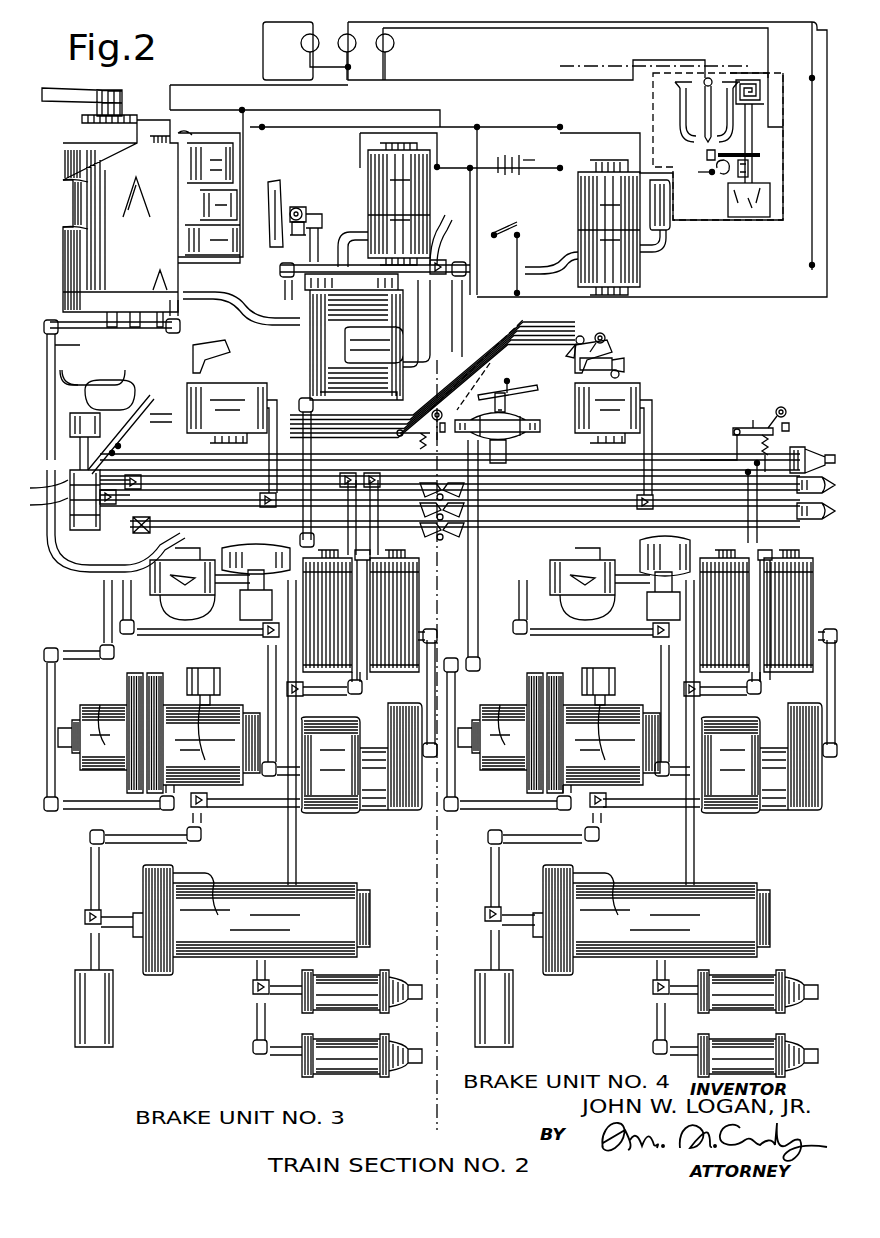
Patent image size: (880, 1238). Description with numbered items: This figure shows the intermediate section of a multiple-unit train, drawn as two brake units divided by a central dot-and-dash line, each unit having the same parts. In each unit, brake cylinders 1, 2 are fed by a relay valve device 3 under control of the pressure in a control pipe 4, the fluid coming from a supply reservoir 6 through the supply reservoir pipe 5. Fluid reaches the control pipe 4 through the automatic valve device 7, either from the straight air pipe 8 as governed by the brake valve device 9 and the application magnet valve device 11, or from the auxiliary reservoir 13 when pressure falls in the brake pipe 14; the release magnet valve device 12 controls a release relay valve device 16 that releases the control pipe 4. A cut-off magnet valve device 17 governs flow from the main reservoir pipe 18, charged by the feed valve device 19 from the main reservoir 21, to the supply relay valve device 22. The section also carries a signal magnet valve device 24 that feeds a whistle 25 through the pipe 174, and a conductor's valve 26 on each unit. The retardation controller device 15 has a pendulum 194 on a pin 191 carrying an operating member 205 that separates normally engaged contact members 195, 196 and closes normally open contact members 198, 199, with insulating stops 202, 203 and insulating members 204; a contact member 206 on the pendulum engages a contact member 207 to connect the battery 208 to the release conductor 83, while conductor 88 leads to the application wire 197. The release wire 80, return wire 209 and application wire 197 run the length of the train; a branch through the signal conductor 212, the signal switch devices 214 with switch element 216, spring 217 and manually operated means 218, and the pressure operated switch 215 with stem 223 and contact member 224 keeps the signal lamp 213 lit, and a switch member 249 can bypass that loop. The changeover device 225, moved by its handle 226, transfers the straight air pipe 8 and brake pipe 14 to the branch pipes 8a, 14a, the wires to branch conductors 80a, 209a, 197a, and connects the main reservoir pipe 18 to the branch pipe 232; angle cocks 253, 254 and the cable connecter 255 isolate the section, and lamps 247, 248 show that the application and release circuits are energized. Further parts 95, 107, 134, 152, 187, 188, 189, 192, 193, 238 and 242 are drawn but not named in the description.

The brake cylinder 1 is at (302, 1060).
The brake cylinder 2 is at (302, 1000).
The relay valve device 3 is at (156, 988).
The control pipe 4 is at (232, 805).
The supply reservoir pipe 5 is at (360, 693).
The supply reservoir 6 is at (628, 553).
The automatic valve device 7 is at (94, 772).
The straight air pipe 8 is at (677, 500).
The branch straight air pipe 8a is at (140, 400).
The brake valve device 9 is at (145, 130).
The application magnet valve device 11 is at (356, 551).
The release magnet valve device 12 is at (426, 551).
The auxiliary reservoir 13 is at (213, 672).
The brake pipe 14 is at (687, 503).
The branch brake pipe 14a is at (52, 322).
The retardation controller device 15 is at (762, 233).
The release relay valve device 16 is at (375, 806).
The cut-off magnet valve device 17 is at (358, 175).
The main reservoir pipe 18 is at (450, 265).
The feed valve device 19 is at (299, 238).
The main reservoir 21 is at (283, 190).
The supply relay valve device 22 is at (398, 318).
The signal magnet valve device 24 is at (583, 167).
The whistle 25 is at (667, 212).
The conductor's valve 26 is at (265, 385).
The release magnet valve wire 80 is at (632, 460).
The branch release conductor 80a is at (300, 127).
The release magnet valve conductor 83 is at (188, 96).
The conductor 88 is at (182, 85).
The casing 95 is at (75, 300).
The pipe 107 is at (430, 700).
The valve 134 is at (78, 970).
The pipe 152 is at (340, 240).
The pipe 174 is at (660, 240).
The lever 187 is at (593, 357).
The link 188 is at (626, 364).
The pivot 189 is at (628, 376).
The pin 191 is at (766, 89).
The pivot 192 is at (606, 338).
The lever 193 is at (573, 341).
The pendulum 194 is at (770, 205).
The contact member 195 is at (762, 137).
The contact member 196 is at (754, 113).
The application magnet valve conductor 197 is at (512, 24).
The application conductor 197a is at (430, 302).
The contact member 198 is at (725, 137).
The contact member 199 is at (680, 112).
The insulating stop member 202 is at (678, 86).
The insulating stop 203 is at (733, 86).
The insulating members 204 is at (706, 78).
The operating member 205 is at (762, 157).
The contact member 206 is at (750, 175).
The contact member 207 is at (716, 178).
The battery 208 is at (530, 162).
The common return wire 209 is at (673, 470).
The neutral conductor 209a is at (478, 170).
The signal conductor 212 is at (471, 32).
The signal lamp 213 is at (394, 43).
The signal switch device 214 is at (753, 412).
The pressure operated switch 215 is at (535, 409).
The switch element 216 is at (735, 428).
The spring 217 is at (780, 432).
The manually operated means 218 is at (783, 408).
The stem 223 is at (528, 386).
The contact member 224 is at (500, 352).
The changeover device 225 is at (100, 530).
The handle 226 is at (100, 565).
The branch pipe 232 is at (555, 258).
The valve 238 is at (162, 580).
The wire 242 is at (360, 138).
The visual indicator 247 is at (310, 35).
The visual signal 248 is at (311, 58).
The switch member 249 is at (510, 225).
The angle cock 253 is at (806, 517).
The angle cock 254 is at (798, 488).
The cable connecter 255 is at (813, 449).